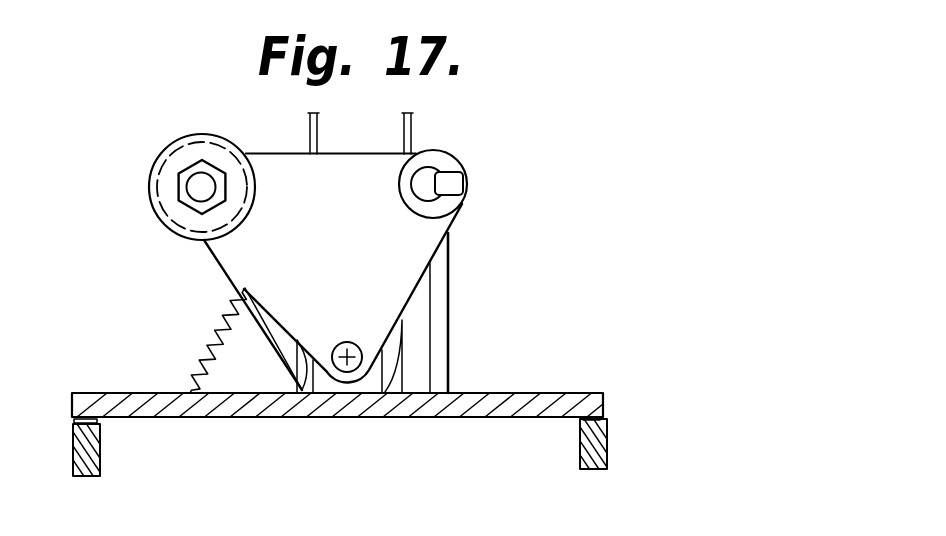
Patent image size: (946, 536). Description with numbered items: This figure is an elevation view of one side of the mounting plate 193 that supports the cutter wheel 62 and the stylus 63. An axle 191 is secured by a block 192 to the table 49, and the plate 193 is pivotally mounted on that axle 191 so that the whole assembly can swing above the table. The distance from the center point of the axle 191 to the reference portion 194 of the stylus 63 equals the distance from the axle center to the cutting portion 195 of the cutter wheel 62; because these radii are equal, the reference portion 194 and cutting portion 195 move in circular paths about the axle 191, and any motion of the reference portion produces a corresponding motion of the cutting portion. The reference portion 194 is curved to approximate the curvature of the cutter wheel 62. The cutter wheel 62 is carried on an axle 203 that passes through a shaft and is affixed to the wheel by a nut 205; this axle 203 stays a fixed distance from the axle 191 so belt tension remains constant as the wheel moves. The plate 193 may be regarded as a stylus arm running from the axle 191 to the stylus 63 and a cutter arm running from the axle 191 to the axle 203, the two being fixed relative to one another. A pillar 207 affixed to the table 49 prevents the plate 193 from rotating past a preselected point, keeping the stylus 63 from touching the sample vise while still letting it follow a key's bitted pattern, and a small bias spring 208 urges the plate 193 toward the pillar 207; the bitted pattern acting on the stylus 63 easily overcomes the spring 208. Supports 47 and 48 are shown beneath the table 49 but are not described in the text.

The left support block 47 is at (74, 440).
The right support block 48 is at (608, 447).
The table 49 is at (535, 392).
The cutter wheel 62 is at (168, 148).
The stylus 63 is at (450, 193).
The axle 191 is at (350, 362).
The block 192 is at (329, 384).
The mounting plate 193 is at (343, 160).
The reference portion 194 is at (464, 187).
The cutting portion 195 is at (164, 231).
The axle 203 is at (194, 182).
The nut 205 is at (179, 196).
The pillar 207 is at (450, 309).
The bias spring 208 is at (226, 312).